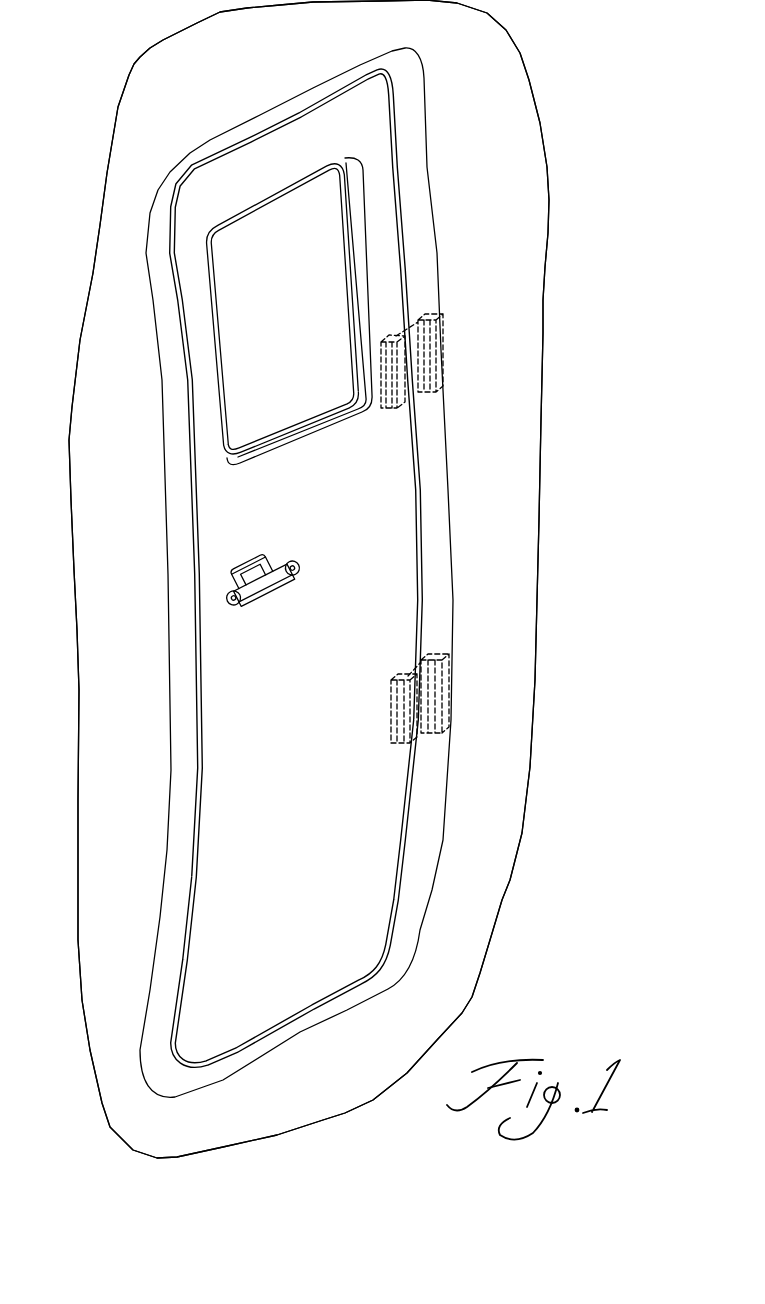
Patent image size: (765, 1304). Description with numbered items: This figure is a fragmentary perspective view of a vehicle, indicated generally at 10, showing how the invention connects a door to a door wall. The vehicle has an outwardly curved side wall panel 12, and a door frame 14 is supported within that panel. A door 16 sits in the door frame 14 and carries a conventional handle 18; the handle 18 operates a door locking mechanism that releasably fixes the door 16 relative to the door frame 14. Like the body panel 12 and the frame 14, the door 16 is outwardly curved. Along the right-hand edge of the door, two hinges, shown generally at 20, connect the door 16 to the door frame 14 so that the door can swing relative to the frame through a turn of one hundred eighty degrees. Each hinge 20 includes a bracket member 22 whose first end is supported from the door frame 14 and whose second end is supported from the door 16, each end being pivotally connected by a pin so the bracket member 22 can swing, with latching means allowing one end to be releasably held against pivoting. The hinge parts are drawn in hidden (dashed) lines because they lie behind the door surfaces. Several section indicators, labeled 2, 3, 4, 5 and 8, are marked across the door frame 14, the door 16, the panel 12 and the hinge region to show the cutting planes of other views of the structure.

The door assembly 10 is at (543, 122).
The side wall panel 12 is at (527, 331).
The door frame 14 is at (440, 470).
The door 16 is at (410, 838).
The handle 18 is at (265, 590).
The hinge 20 is at (391, 414).
The bracket member 22 is at (420, 315).
The section line 2- 2 is at (220, 77).
The section line 3- 3 is at (260, 353).
The section line 4- 4 is at (305, 957).
The section line 5- 5 is at (308, 268).
The section line 8- 8 is at (342, 713).